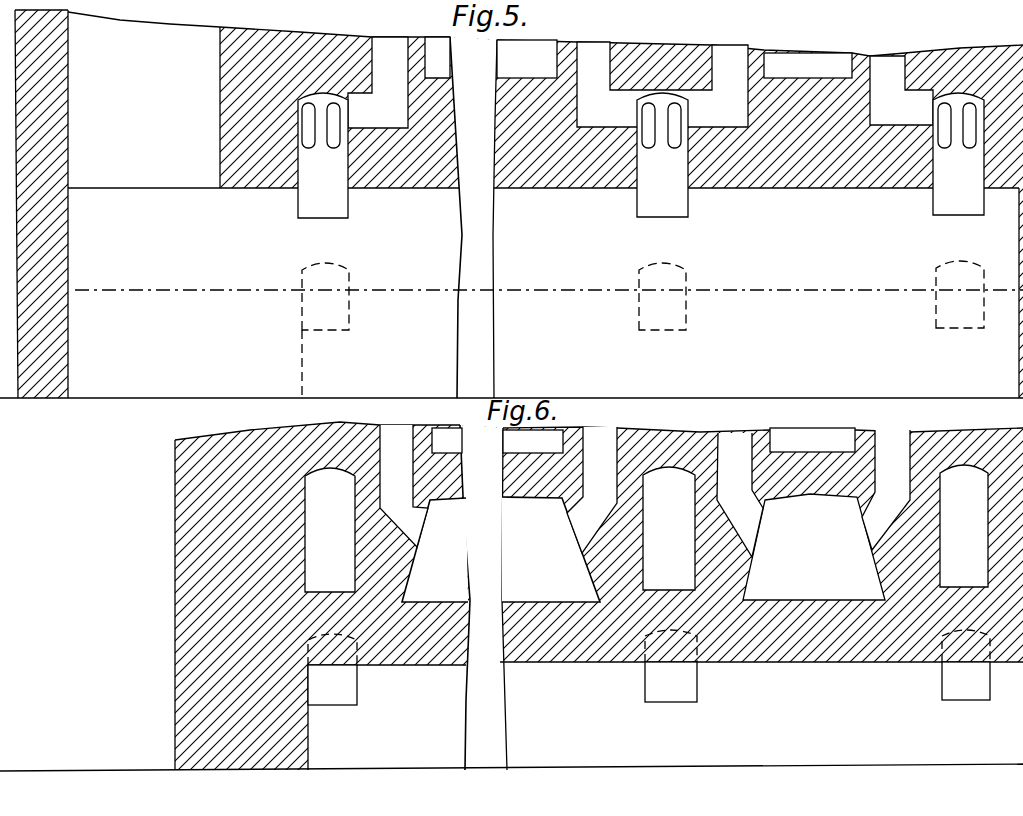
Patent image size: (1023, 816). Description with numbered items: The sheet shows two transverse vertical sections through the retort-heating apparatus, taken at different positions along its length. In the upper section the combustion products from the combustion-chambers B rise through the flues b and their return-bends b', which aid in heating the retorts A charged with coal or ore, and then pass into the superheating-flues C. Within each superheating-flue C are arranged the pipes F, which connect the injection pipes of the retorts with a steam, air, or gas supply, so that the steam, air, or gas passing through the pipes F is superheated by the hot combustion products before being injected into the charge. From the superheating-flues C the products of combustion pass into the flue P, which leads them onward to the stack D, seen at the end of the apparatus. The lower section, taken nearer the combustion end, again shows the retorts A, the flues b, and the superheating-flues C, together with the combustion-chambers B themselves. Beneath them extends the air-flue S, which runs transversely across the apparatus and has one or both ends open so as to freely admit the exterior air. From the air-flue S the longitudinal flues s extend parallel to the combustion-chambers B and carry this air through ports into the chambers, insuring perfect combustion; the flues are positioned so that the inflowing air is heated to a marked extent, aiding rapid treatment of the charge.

In FIG. 5, the stack D is at (144, 100).
In FIG. 5, the return-bends b' is at (640, 82).
In FIG. 5, the retorts A is at (822, 44).
In FIG. 6, the retorts A is at (523, 443).
In FIG. 5, the superheating-flues C is at (641, 245).
In FIG. 6, the superheating-flues C is at (646, 528).
In FIG. 5, the pipes F is at (313, 120).
In FIG. 5, the flue P is at (511, 338).
In FIG. 6, the flues b is at (645, 491).
In FIG. 6, the combustion-chambers B is at (643, 548).
In FIG. 6, the air-flue S is at (511, 716).
In FIG. 6, the longitudinal flues s is at (649, 667).